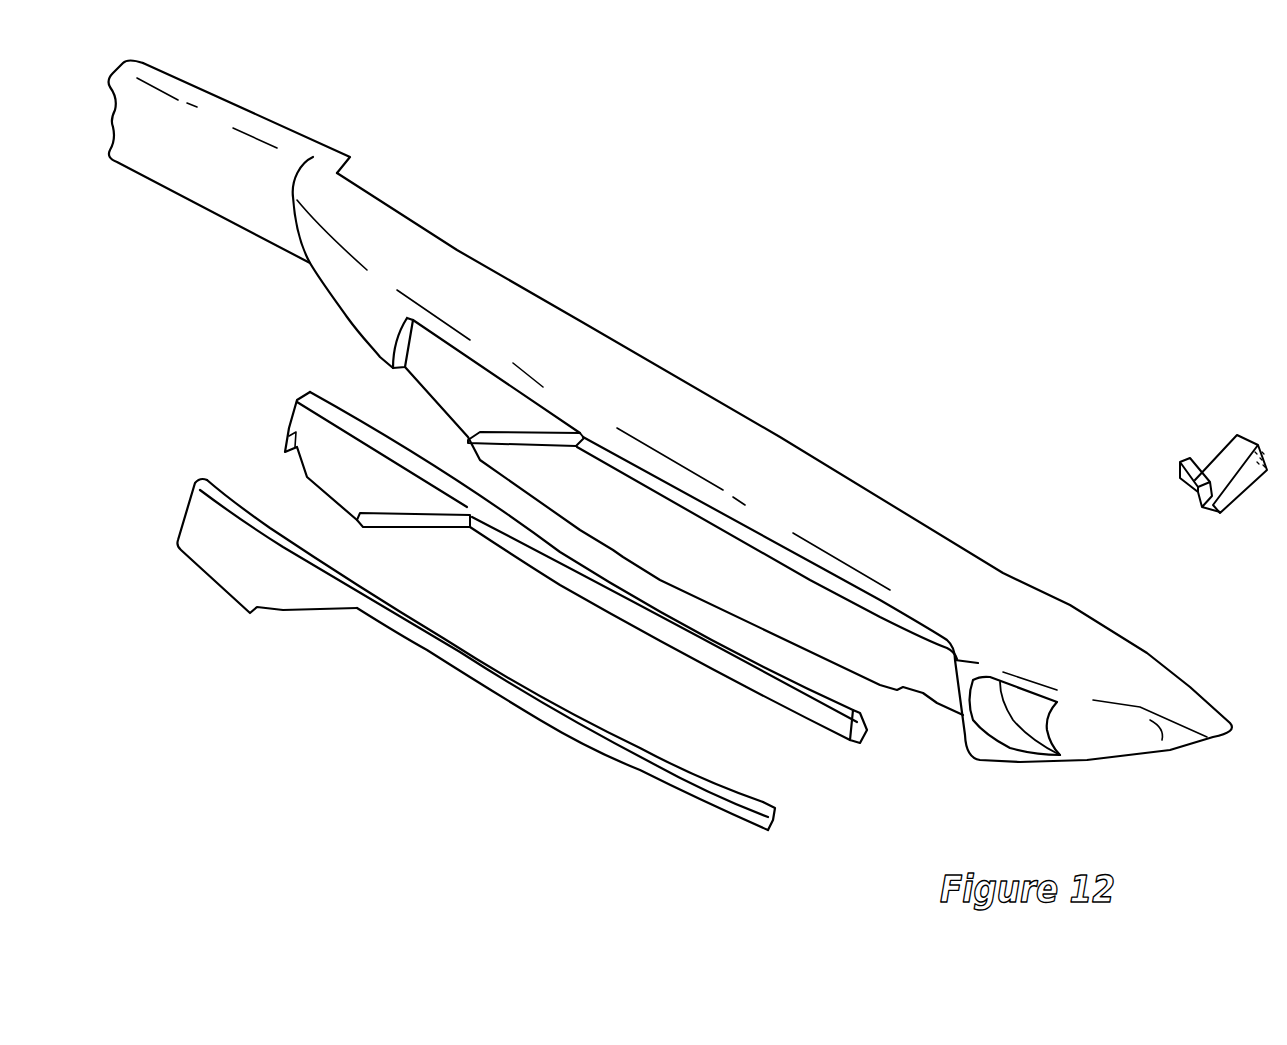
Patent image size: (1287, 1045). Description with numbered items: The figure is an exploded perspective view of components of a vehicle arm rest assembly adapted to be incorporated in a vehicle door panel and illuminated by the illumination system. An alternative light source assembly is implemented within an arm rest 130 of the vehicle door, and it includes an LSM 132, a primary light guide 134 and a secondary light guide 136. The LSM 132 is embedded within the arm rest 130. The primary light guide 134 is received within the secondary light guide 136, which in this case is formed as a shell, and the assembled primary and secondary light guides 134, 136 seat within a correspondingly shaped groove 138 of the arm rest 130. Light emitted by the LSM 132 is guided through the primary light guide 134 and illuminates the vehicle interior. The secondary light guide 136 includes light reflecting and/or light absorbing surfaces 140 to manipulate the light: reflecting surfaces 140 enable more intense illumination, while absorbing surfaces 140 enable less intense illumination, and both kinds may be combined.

The arm rest 130 is at (582, 318).
The LSM 132 is at (1228, 431).
The primary light guide 134 is at (732, 818).
The secondary light guide 136 is at (710, 670).
The groove 138 is at (447, 381).
The light reflecting and/or light absorbing surfaces 140 is at (342, 466).